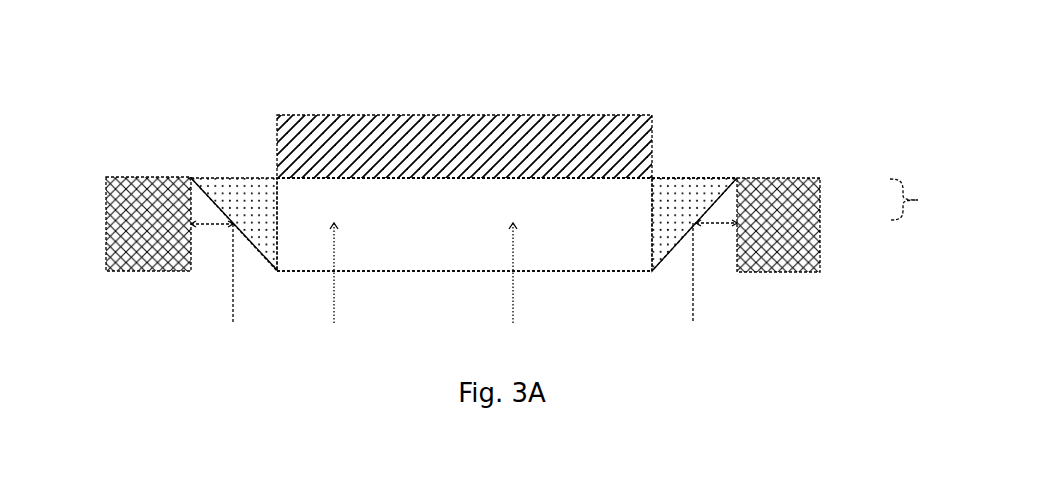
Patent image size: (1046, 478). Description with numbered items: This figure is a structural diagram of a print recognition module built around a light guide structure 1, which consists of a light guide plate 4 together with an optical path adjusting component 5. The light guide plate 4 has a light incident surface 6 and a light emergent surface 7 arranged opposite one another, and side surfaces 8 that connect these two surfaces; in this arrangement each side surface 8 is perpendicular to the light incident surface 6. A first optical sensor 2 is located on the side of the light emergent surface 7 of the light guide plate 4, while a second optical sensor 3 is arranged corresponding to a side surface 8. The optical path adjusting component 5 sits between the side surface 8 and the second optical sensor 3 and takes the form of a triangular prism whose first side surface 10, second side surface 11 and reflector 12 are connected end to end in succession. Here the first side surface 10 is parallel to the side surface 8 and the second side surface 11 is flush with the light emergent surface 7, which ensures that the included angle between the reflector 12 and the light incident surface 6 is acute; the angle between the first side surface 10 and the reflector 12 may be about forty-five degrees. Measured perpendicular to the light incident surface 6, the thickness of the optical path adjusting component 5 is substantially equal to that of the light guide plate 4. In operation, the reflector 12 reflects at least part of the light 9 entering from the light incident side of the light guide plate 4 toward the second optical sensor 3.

The light guide structure 1 is at (914, 199).
The first optical sensor 2 is at (623, 137).
The second optical sensor 3 is at (137, 231).
The light guide plate 4 is at (627, 219).
The optical path adjusting component 5 is at (715, 193).
The light incident surface 6 is at (312, 273).
The light emergent surface 7 is at (327, 177).
The side surface 8 is at (275, 206).
The light 9 is at (233, 292).
The first side surface 10 is at (662, 178).
The second side surface 11 is at (697, 178).
The reflector 12 is at (663, 257).